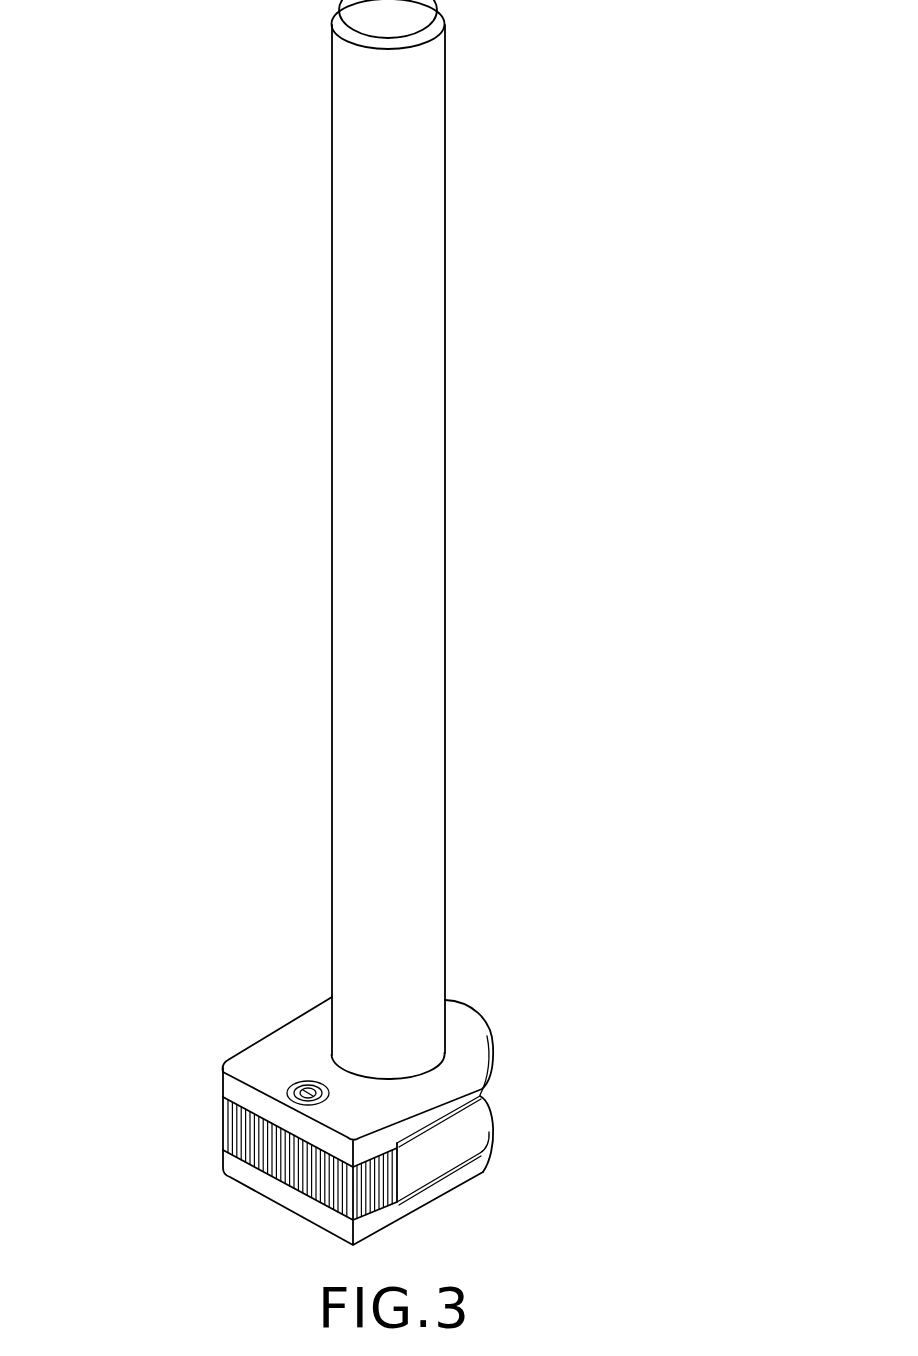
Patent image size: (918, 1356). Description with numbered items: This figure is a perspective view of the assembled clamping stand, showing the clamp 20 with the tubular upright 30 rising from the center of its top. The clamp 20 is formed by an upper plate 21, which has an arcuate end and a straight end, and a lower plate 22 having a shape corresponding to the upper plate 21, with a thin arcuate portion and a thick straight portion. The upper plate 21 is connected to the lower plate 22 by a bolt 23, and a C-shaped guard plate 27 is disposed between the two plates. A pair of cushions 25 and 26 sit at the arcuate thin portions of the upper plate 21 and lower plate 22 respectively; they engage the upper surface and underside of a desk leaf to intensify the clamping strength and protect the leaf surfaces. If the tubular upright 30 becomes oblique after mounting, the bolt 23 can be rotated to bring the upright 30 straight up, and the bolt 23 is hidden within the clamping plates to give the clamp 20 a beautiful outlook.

The clamp 20 is at (325, 622).
The upper plate 21 is at (472, 1032).
The lower plate 22 is at (482, 1172).
The bolt 23 is at (300, 1085).
The cushion 25 is at (478, 1128).
The cushion 26 is at (478, 1092).
The C-shaped guard plate 27 is at (235, 1131).
The tubular upright 30 is at (430, 404).